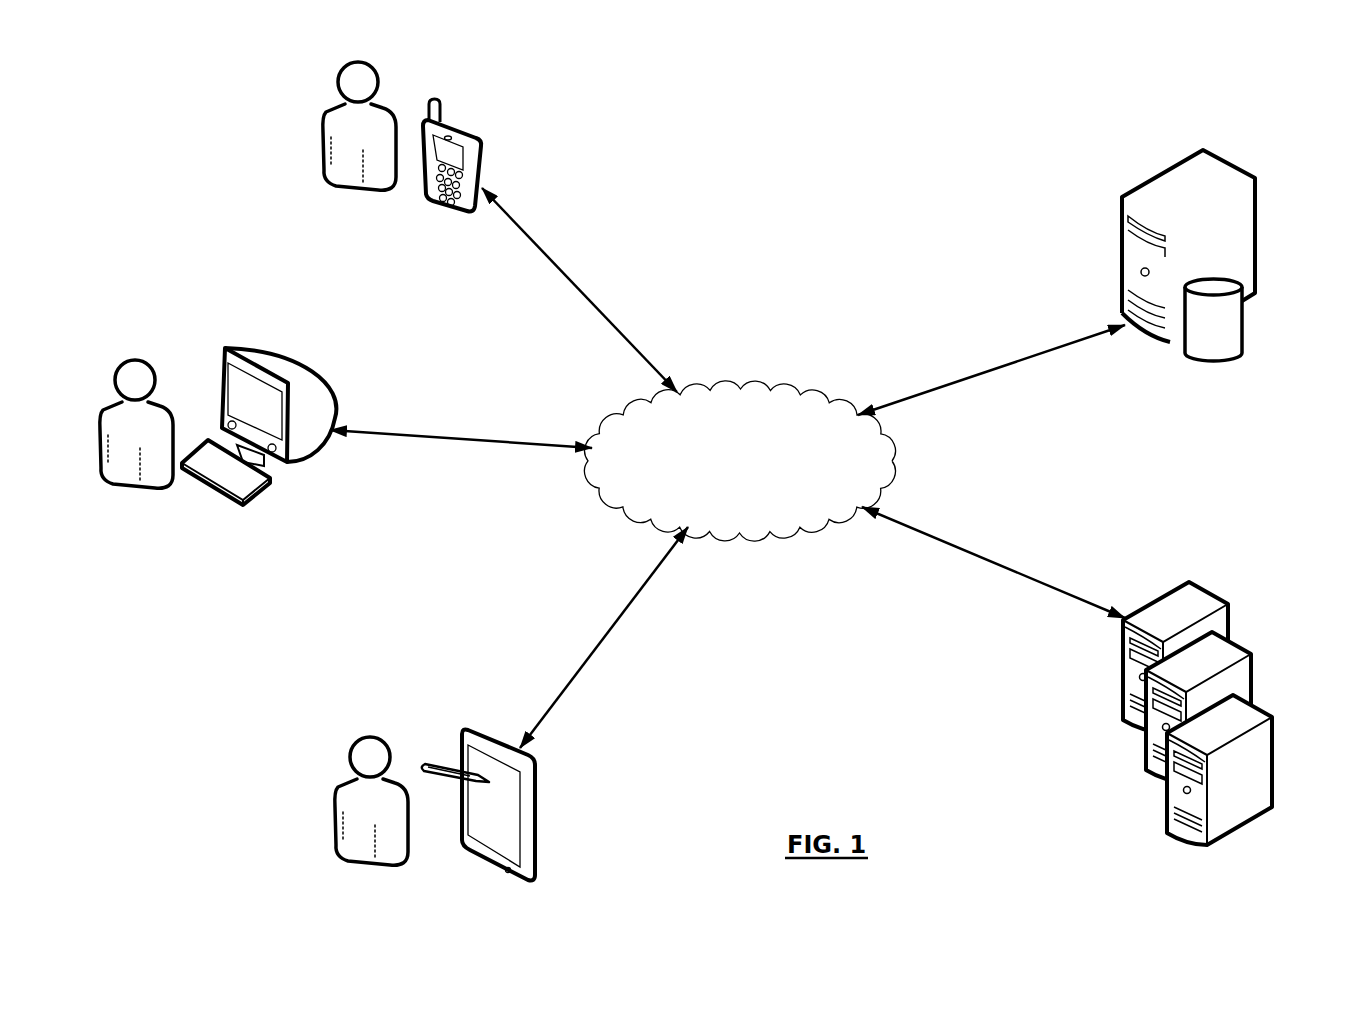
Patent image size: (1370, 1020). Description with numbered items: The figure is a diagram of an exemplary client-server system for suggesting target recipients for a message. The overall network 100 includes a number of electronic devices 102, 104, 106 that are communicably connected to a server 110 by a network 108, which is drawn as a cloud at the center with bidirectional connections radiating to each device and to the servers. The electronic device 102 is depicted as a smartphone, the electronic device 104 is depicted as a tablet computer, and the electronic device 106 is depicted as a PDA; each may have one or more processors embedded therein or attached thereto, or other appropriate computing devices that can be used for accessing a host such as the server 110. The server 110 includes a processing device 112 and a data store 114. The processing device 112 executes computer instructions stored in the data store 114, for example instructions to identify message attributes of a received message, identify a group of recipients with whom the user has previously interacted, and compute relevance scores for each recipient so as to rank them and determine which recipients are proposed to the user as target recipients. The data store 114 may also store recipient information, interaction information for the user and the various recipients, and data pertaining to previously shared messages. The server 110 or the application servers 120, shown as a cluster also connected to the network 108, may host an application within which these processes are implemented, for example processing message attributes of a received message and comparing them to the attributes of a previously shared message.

The network 100 is at (870, 110).
The electronic device 102 is at (467, 125).
The electronic device 104 is at (297, 362).
The electronic device 106 is at (473, 727).
The network 108 is at (742, 387).
The server 110 is at (1124, 364).
The processing device 112 is at (1228, 158).
The data store 114 is at (1242, 340).
The application servers 120 is at (1118, 809).